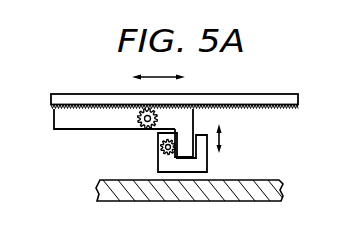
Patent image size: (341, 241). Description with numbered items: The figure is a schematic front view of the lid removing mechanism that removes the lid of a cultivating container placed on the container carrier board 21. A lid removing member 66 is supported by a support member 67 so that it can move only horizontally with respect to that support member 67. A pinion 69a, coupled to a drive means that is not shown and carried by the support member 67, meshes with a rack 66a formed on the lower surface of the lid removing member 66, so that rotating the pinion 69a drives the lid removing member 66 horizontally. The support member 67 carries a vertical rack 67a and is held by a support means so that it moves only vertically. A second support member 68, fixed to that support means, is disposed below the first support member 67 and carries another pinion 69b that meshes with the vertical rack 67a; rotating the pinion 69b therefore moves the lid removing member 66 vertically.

The lid removing member 66 is at (259, 102).
The rack 66a is at (253, 112).
The support member 67 is at (61, 117).
The vertical rack 67a is at (174, 137).
The second support member 68 is at (203, 167).
The pinion 69a is at (146, 130).
The pinion 69b is at (169, 155).
The container carrier board 21 is at (110, 192).